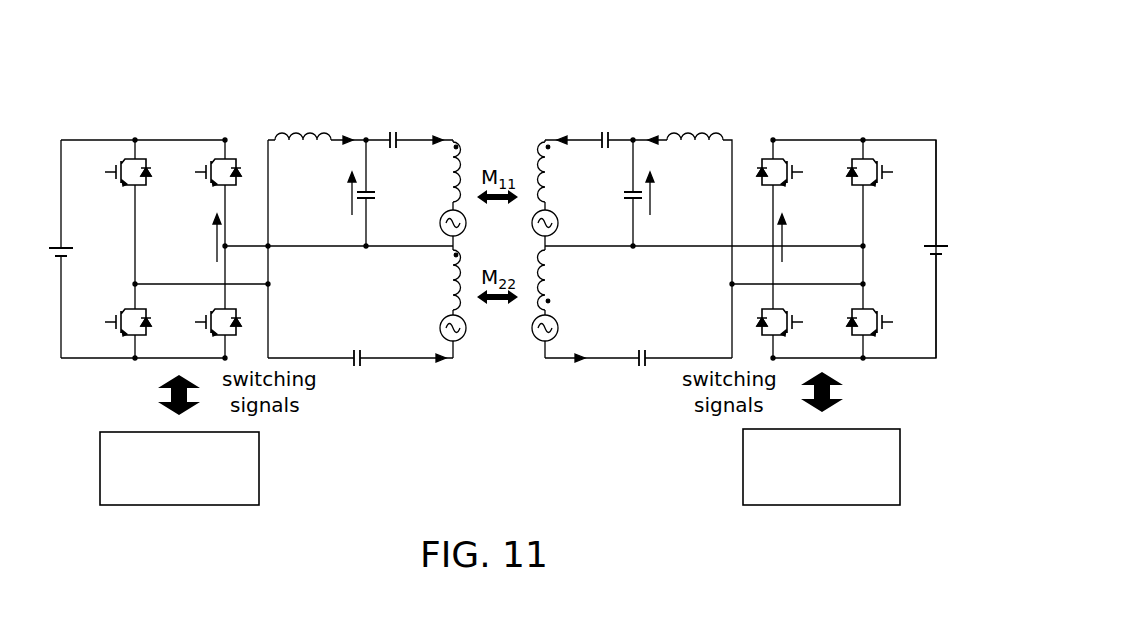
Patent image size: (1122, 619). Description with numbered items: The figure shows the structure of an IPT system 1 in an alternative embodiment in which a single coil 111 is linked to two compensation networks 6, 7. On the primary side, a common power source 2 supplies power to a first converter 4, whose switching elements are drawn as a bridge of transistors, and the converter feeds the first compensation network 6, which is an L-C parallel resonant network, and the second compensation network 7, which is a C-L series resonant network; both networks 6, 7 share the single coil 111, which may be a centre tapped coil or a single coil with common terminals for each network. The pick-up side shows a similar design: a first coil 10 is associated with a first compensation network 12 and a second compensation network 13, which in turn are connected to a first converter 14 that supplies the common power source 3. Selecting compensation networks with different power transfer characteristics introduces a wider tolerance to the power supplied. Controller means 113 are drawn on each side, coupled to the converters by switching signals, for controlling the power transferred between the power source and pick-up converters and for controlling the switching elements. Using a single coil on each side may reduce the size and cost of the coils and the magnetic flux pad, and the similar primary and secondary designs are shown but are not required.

The IPT system 1 is at (845, 206).
The common power source 2 is at (59, 237).
The common power source 3 is at (942, 237).
The first converter 4 is at (162, 156).
The first compensation network 6 is at (366, 126).
The second compensation network 7 is at (377, 380).
The first coil 10 is at (534, 141).
The first compensation network 12 is at (658, 90).
The second compensation network 13 is at (658, 368).
The first converter 14 is at (820, 158).
The single coil 111 is at (462, 136).
The controller means 113 is at (231, 497).